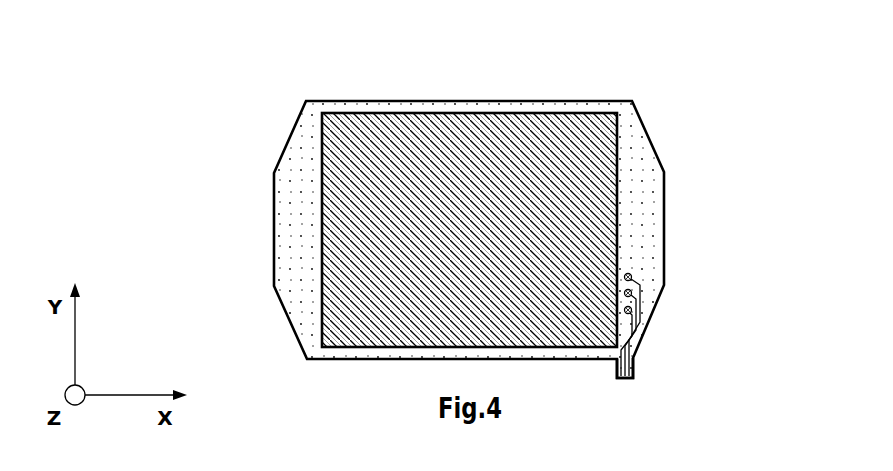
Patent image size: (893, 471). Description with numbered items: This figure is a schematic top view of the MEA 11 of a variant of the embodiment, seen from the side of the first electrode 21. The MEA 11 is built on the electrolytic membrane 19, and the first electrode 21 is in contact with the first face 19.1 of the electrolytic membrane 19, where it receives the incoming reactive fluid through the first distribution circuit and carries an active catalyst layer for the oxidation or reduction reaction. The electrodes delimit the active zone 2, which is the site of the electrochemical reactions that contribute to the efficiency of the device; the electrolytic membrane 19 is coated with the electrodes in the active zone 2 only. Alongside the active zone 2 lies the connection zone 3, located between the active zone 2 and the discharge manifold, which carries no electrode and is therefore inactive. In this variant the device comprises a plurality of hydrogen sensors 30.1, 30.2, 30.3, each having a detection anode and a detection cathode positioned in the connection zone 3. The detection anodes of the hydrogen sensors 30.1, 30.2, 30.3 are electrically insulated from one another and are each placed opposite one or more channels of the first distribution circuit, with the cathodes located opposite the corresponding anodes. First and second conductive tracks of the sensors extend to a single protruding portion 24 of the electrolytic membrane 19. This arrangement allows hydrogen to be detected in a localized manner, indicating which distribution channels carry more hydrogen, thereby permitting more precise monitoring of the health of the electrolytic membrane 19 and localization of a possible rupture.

The MEA 11 is at (431, 209).
The electrolytic membrane 19 is at (469, 209).
The first face of the electrolytic membrane 19.1 is at (434, 101).
The first electrode 21 is at (481, 168).
The active zone 2 is at (469, 194).
The connection zone 3 is at (686, 227).
The hydrogen sensor 30.1 is at (658, 321).
The hydrogen sensor 30.2 is at (662, 296).
The hydrogen sensor 30.3 is at (656, 273).
The protruding portion 24 is at (633, 368).